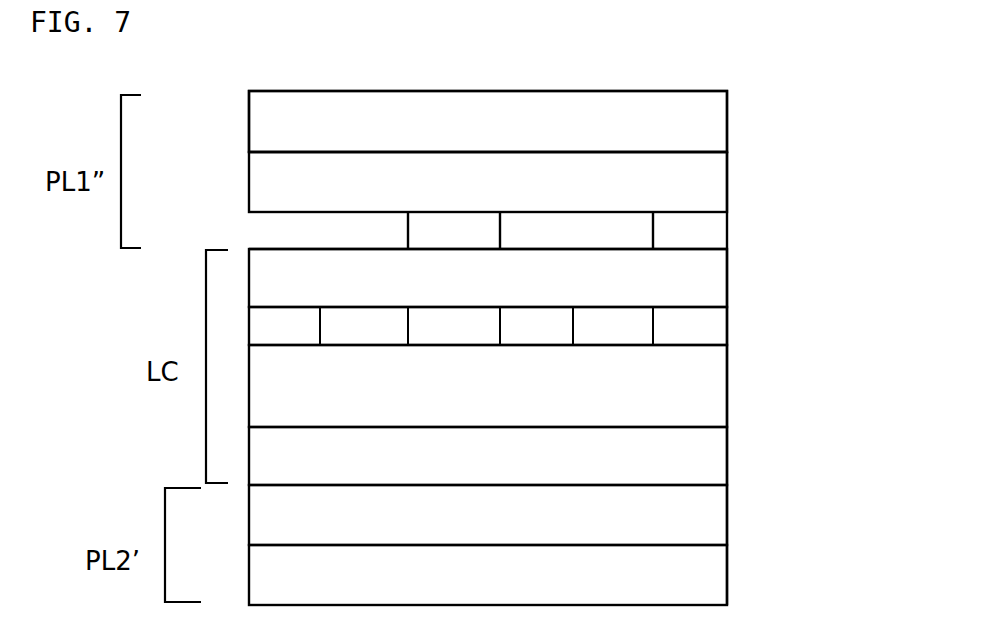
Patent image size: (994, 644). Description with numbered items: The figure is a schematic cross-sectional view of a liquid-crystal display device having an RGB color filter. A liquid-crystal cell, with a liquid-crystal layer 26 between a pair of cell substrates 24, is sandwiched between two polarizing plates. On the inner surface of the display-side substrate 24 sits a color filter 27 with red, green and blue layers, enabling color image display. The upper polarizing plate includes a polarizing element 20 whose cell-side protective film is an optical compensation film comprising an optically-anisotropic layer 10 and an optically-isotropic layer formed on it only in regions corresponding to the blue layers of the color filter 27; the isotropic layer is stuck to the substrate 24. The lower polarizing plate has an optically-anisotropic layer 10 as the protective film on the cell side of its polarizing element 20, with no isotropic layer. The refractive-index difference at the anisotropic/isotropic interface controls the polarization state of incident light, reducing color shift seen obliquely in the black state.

The polarizing element 20 is at (700, 127).
The optically-anisotropic layer 10 is at (716, 185).
The cell substrate 24 is at (712, 287).
The color filter 27 is at (714, 329).
The liquid-crystal layer 26 is at (700, 372).